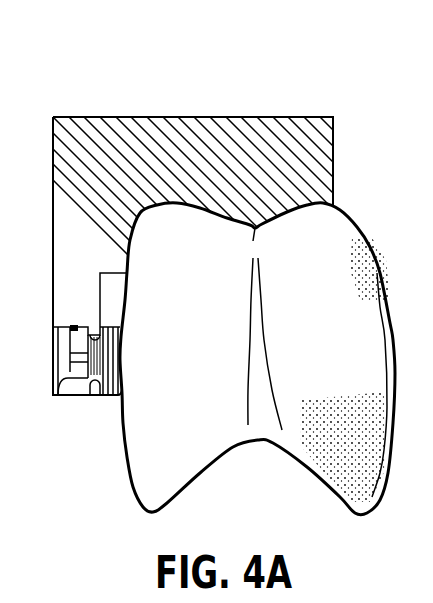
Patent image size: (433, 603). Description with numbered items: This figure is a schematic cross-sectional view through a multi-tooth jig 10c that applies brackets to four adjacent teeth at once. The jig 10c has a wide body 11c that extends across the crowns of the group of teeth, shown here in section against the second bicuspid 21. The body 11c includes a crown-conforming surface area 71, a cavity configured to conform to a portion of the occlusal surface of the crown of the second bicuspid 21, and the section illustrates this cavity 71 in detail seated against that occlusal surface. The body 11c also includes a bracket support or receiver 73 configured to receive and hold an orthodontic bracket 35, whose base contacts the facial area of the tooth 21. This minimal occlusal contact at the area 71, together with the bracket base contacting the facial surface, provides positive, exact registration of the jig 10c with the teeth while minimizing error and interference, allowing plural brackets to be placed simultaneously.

The jig 10c is at (88, 59).
The body 11c is at (186, 117).
The bracket support or receiver 73 is at (53, 228).
The crown-conforming surface area 71 is at (186, 206).
The second bicuspid 21 is at (200, 379).
The orthodontic bracket 35 is at (62, 396).